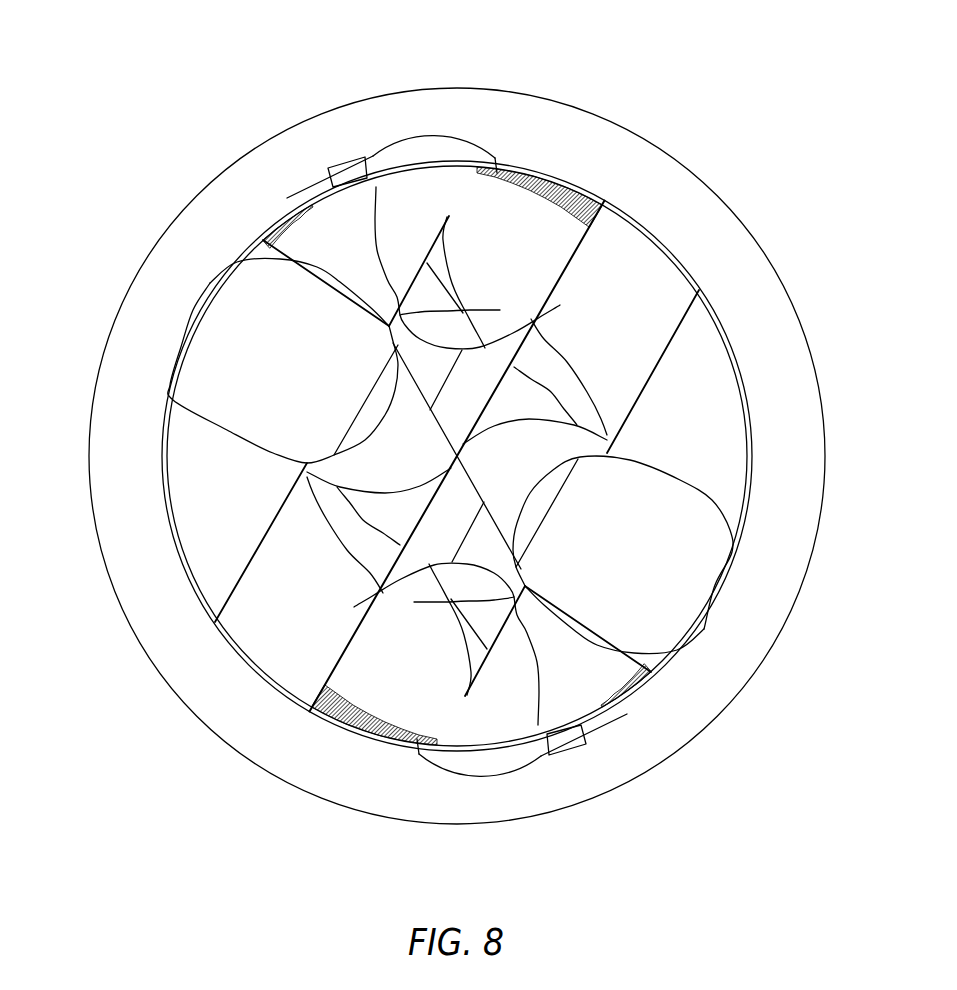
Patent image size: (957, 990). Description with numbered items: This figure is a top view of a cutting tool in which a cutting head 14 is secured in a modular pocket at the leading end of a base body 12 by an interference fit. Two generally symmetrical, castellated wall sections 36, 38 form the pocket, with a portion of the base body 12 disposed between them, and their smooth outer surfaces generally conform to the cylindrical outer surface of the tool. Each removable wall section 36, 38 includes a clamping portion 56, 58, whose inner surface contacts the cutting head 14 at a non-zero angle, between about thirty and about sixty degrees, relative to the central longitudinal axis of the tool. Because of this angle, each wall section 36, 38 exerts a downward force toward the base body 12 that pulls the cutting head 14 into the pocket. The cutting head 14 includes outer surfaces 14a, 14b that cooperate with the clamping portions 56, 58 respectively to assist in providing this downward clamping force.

The base body 12 is at (200, 540).
The cutting head 14 is at (415, 585).
The outer surface 14a is at (518, 457).
The outer surface 14b is at (393, 462).
The wall section 36 is at (716, 614).
The wall section 38 is at (200, 288).
The clamping portion 56 is at (660, 568).
The clamping portion 58 is at (293, 333).